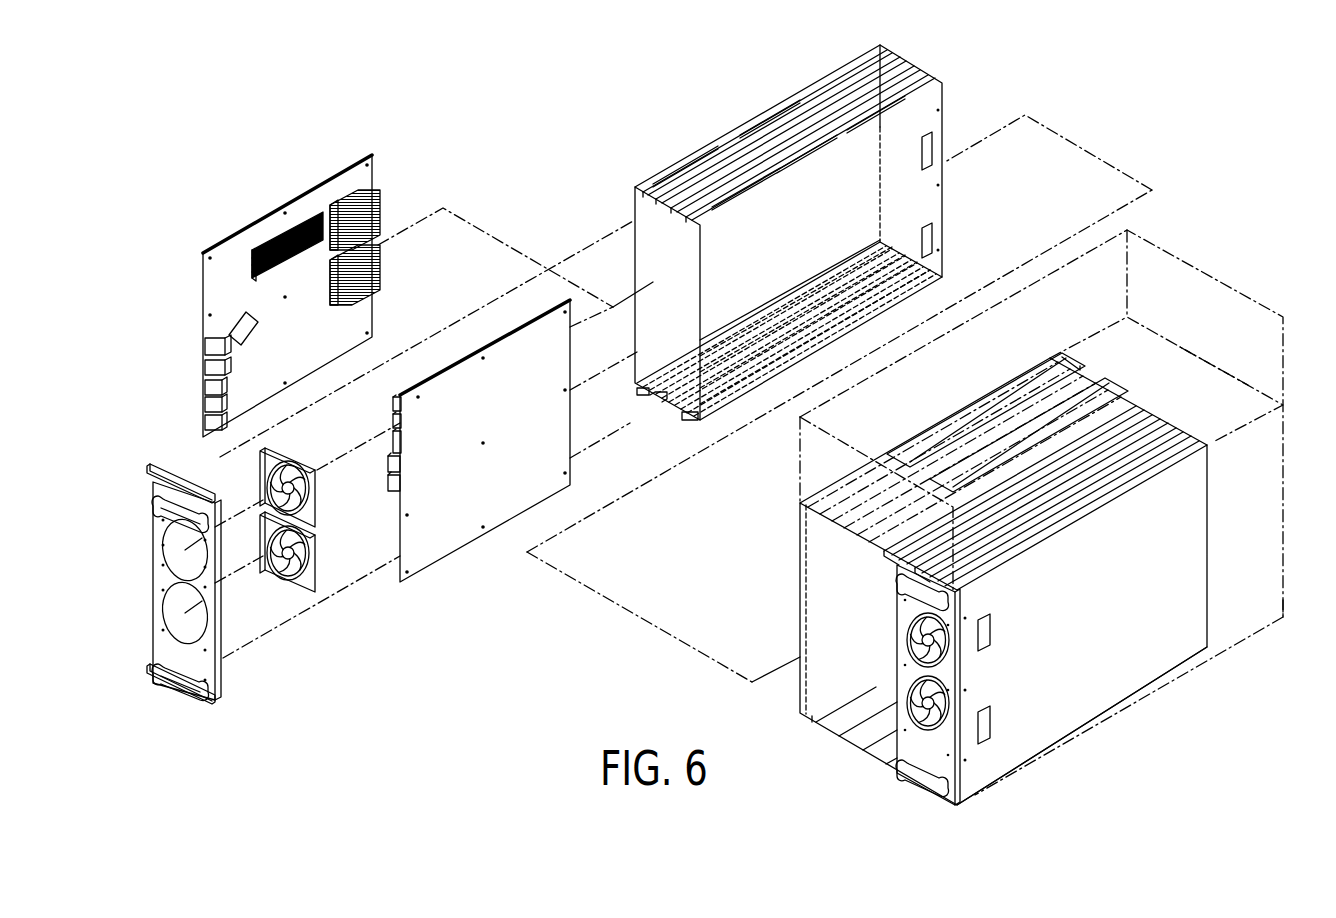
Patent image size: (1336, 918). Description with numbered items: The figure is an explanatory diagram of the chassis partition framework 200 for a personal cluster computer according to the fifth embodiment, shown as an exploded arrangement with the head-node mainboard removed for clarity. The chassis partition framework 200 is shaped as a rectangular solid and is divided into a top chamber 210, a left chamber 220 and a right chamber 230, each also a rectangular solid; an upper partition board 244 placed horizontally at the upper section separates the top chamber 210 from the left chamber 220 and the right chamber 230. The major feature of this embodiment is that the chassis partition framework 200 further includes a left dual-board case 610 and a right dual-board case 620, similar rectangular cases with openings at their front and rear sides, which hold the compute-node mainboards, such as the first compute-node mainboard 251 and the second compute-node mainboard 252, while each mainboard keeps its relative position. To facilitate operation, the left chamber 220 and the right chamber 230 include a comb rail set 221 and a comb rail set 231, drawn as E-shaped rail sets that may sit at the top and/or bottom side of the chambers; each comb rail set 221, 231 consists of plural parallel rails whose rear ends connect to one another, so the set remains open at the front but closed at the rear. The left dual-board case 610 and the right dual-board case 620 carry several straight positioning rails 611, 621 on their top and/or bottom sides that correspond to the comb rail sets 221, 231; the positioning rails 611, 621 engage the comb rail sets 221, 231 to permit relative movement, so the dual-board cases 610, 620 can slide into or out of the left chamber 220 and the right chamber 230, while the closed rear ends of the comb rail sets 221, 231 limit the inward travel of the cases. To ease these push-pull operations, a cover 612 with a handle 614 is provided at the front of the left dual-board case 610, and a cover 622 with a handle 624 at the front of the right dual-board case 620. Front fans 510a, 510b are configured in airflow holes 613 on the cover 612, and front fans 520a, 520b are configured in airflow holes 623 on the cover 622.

The chassis partition framework 200 is at (1194, 695).
The top chamber 210 is at (1143, 280).
The left chamber 220 is at (841, 598).
The comb rail set 221 is at (1102, 368).
The right chamber 230 is at (1050, 709).
The comb rail set 231 is at (1167, 420).
The upper partition board 244 is at (1248, 387).
The first compute-node mainboard 251 is at (246, 245).
The second compute-node mainboard 252 is at (455, 537).
The front fan 510a is at (291, 459).
The front fan 510b is at (320, 551).
The front fan 520a is at (926, 640).
The front fan 520b is at (910, 713).
The left dual-board case 610 is at (781, 258).
The positioning rails 611 is at (833, 128).
The cover 612 is at (228, 610).
The airflow holes 613 is at (190, 625).
The handle 614 is at (182, 690).
The right dual-board case 620 is at (991, 547).
The positioning rails 621 is at (1100, 500).
The cover 622 is at (919, 689).
The airflow holes 623 is at (863, 713).
The handle 624 is at (927, 773).